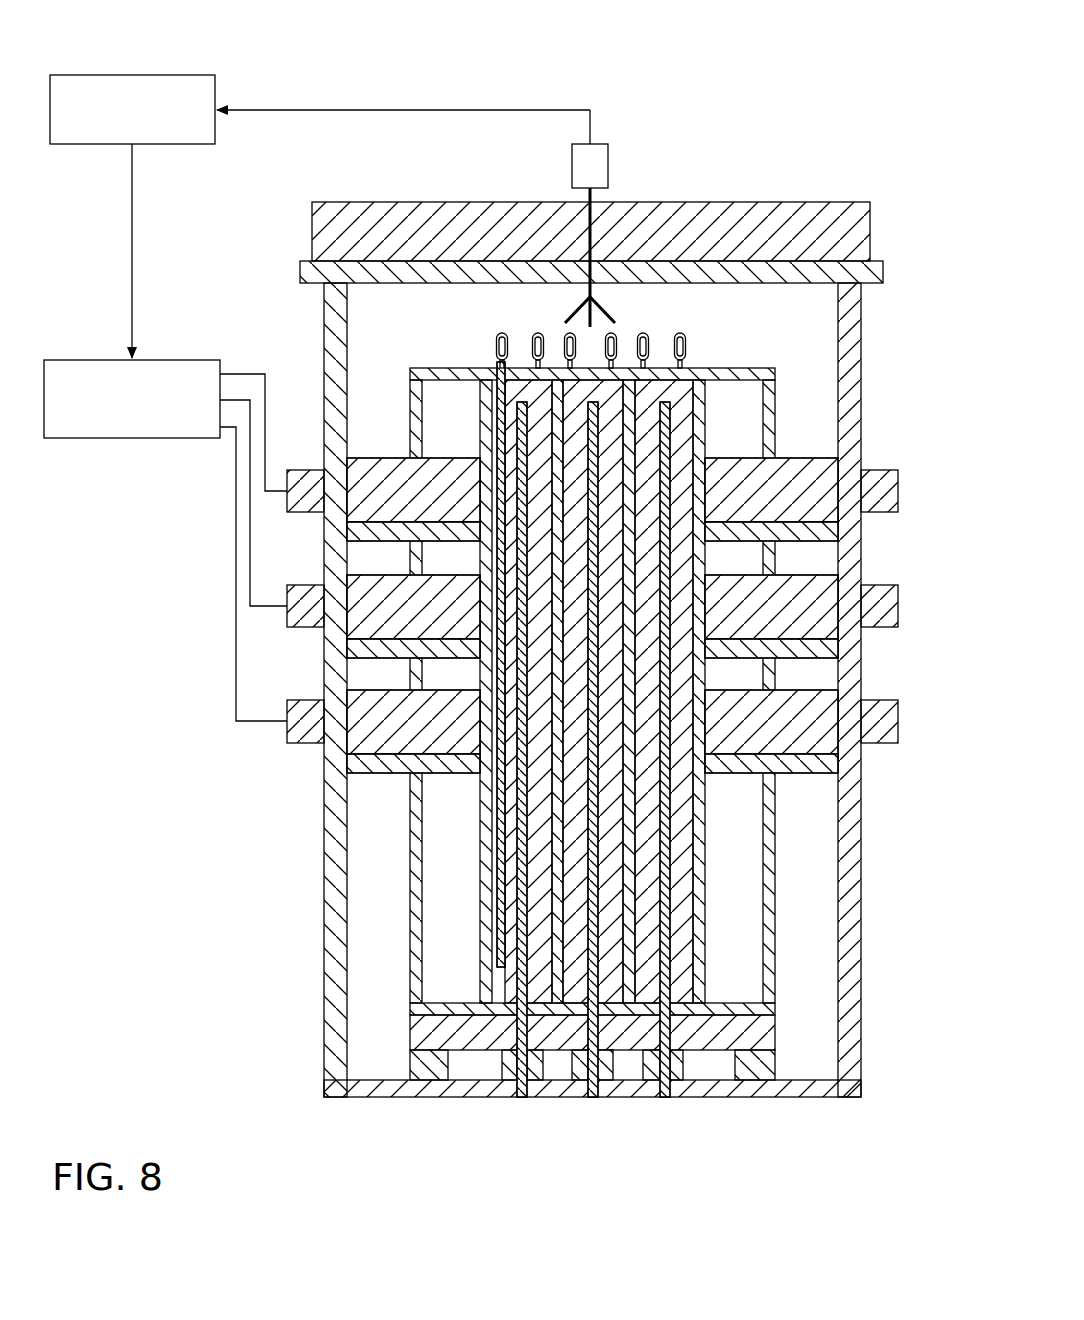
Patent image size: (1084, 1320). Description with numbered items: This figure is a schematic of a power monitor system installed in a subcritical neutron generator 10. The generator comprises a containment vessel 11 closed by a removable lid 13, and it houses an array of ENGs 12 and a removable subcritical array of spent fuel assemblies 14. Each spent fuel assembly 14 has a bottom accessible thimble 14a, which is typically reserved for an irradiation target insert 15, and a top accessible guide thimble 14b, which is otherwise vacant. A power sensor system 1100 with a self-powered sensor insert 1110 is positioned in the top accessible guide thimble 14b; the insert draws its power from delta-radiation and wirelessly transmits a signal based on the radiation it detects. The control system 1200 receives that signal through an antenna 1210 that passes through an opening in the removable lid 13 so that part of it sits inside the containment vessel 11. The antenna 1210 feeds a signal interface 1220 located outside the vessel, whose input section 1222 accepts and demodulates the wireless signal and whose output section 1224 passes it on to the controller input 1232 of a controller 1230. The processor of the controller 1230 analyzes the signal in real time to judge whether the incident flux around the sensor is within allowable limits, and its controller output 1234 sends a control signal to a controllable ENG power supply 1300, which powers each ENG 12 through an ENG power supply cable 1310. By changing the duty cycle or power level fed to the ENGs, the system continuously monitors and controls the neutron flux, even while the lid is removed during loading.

The subcritical neutron generator 10 is at (592, 625).
The containment vessel 11 is at (336, 322).
The ENG 12 is at (898, 722).
The removable lid 13 is at (806, 205).
The spent fuel assembly 14 is at (604, 717).
The bottom accessible thimble 14a is at (672, 1031).
The top accessible guide thimble 14b is at (494, 369).
The irradiation target insert 15 is at (822, 918).
The power sensor system 1100 is at (717, 327).
The self-powered sensor insert 1110 is at (648, 333).
The control system 1200 is at (393, 192).
The antenna 1210 is at (612, 306).
The signal interface 1220 is at (608, 168).
The input section 1222 is at (590, 197).
The output section 1224 is at (590, 140).
The controller 1230 is at (178, 75).
The controller input 1232 is at (218, 108).
The controller output 1234 is at (132, 150).
The ENG power supply 1300 is at (120, 438).
The ENG power supply cable 1310 is at (265, 453).